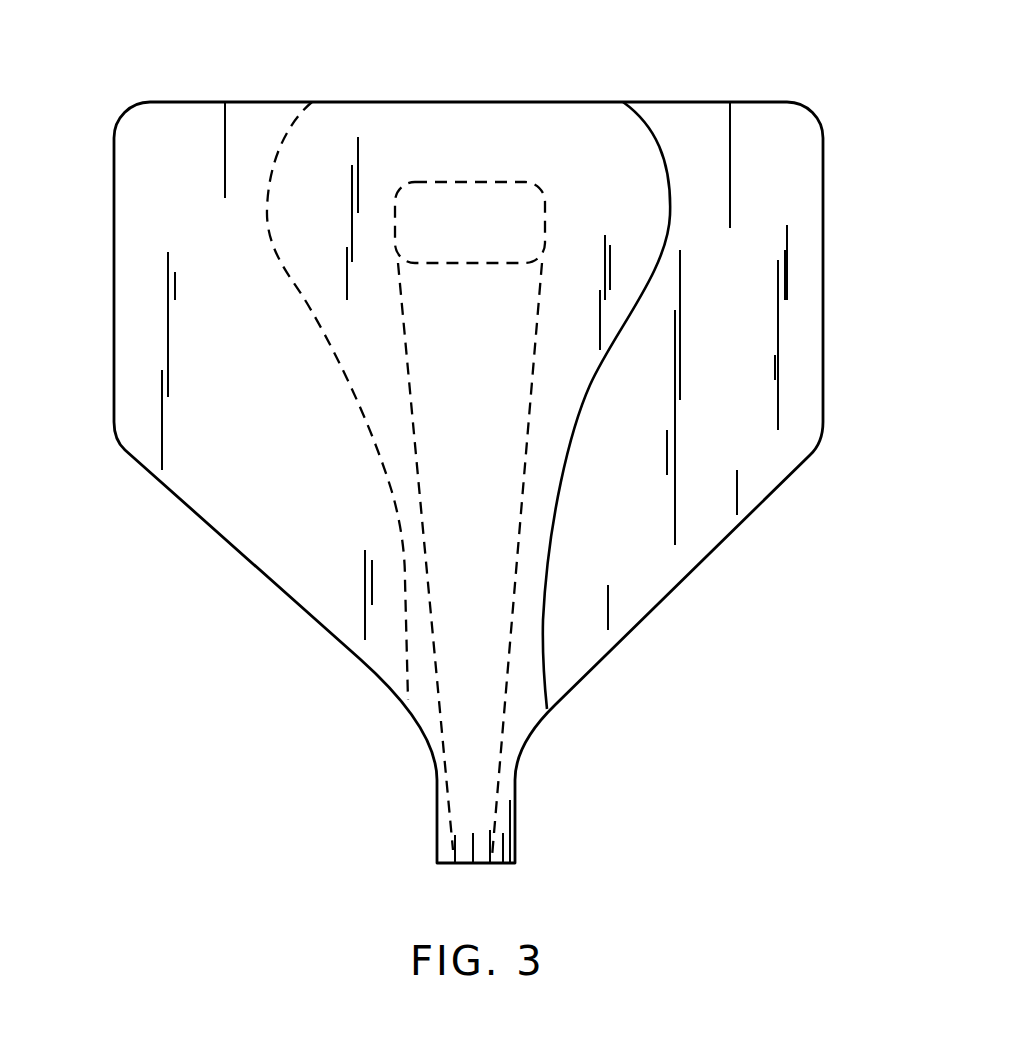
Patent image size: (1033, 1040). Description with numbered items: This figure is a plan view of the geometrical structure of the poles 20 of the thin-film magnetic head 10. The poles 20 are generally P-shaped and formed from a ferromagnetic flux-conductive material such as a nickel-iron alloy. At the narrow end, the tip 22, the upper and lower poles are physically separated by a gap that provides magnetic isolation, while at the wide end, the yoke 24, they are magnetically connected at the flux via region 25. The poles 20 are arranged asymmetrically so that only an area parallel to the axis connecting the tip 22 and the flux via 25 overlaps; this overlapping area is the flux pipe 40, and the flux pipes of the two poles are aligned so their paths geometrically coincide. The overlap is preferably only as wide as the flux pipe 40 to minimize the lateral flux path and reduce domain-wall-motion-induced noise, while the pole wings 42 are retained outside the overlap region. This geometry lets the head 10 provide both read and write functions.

The thin-film magnetic head 10 is at (175, 38).
The poles 20 is at (658, 150).
The tip 22 is at (447, 865).
The yoke 24 is at (645, 203).
The flux via region 25 is at (465, 224).
The flux pipe 40 is at (511, 595).
The pole wings 42 is at (150, 160).